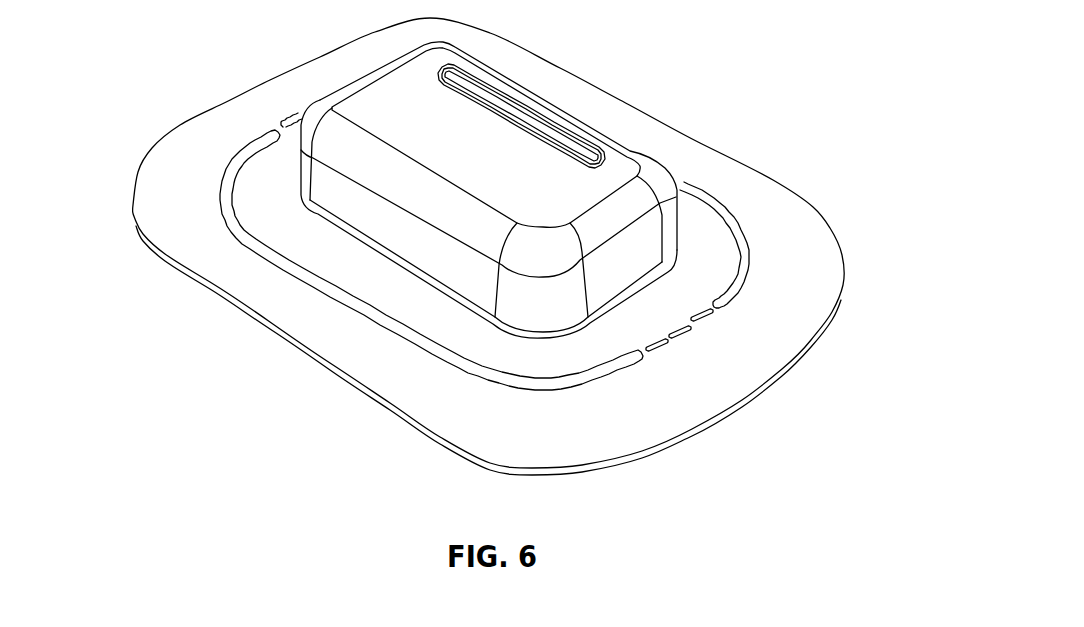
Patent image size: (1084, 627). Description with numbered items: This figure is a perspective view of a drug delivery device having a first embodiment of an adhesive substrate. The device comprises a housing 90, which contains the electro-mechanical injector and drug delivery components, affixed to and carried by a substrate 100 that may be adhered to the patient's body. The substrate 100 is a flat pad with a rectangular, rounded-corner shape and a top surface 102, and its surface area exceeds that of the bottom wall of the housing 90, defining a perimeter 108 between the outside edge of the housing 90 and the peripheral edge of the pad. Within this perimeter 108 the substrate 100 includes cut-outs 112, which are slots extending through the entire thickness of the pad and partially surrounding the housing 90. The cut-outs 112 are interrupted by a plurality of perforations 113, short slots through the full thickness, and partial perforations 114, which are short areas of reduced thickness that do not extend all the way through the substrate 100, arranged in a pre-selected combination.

The housing 90 is at (542, 217).
The substrate 100 is at (827, 223).
The top surface 102 is at (817, 297).
The perimeter 108 is at (168, 197).
The cut-outs 112 is at (377, 308).
The perforations 113 is at (662, 348).
The partial perforations 114 is at (683, 331).